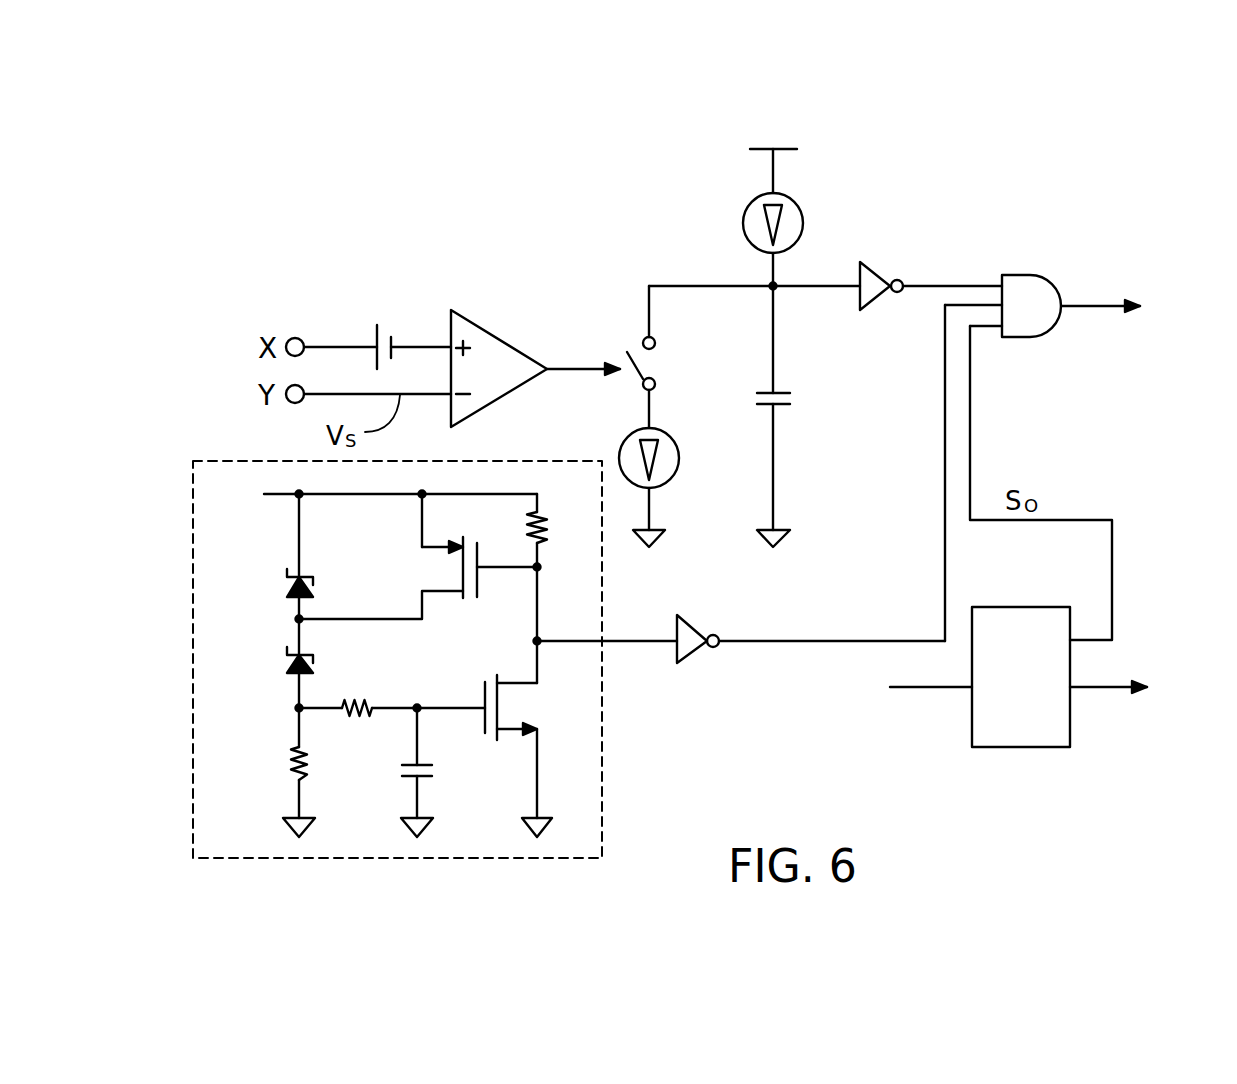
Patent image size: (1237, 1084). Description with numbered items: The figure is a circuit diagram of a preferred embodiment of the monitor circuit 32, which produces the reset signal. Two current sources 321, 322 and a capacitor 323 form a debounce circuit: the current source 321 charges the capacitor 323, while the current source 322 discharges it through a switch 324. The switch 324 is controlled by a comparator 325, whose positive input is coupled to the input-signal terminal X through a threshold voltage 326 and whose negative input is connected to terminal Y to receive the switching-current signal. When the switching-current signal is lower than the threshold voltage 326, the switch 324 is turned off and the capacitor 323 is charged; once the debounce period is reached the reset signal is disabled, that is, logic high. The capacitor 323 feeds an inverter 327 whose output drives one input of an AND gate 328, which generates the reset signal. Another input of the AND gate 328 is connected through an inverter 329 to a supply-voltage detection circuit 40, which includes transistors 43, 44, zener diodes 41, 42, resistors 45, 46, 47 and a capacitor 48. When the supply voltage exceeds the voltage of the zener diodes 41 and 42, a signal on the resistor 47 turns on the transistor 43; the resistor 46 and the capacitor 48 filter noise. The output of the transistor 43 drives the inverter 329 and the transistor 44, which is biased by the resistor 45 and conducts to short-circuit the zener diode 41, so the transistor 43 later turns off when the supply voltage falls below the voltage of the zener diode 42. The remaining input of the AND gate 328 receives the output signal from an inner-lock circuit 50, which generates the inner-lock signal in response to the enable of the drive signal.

The monitor circuit 32 is at (1098, 137).
The current source 321 is at (740, 228).
The current source 322 is at (683, 460).
The capacitor 323 is at (795, 400).
The switch 324 is at (660, 370).
The comparator 325 is at (497, 332).
The threshold voltage 326 is at (390, 322).
The inverter 327 is at (880, 268).
The AND gate 328 is at (1020, 272).
The inverter 329 is at (697, 620).
The VCC-detection circuit 40 is at (235, 460).
The zener diode 41 is at (283, 582).
The zener diode 42 is at (283, 662).
The transistor 43 is at (538, 708).
The transistor 44 is at (418, 573).
The resistor 45 is at (552, 535).
The resistor 46 is at (360, 695).
The resistor 47 is at (315, 765).
The capacitor 48 is at (435, 772).
The inner-lock circuit 50 is at (1072, 728).